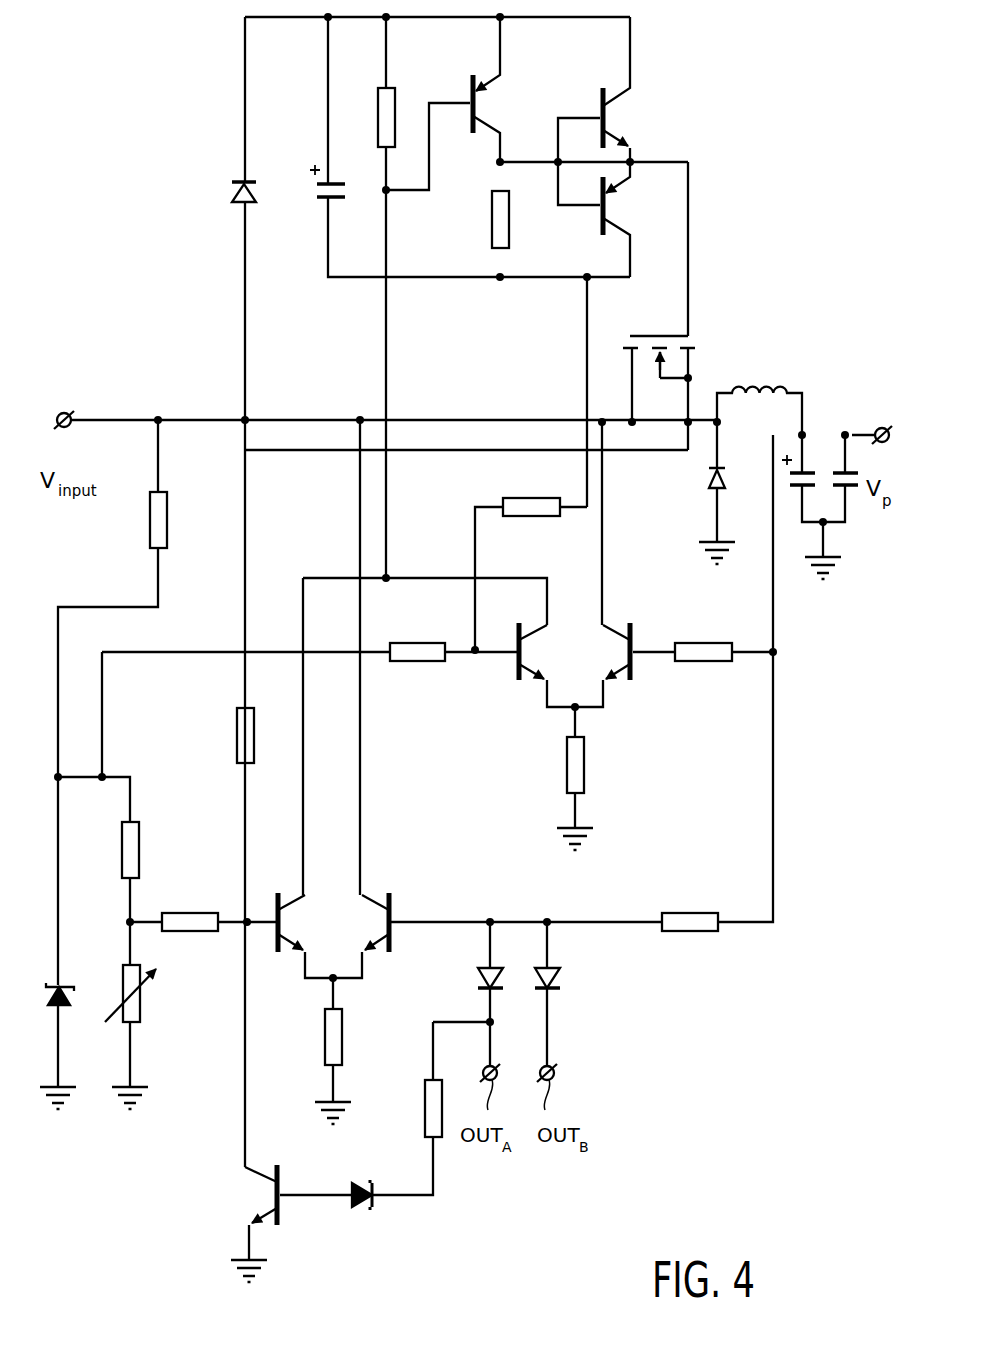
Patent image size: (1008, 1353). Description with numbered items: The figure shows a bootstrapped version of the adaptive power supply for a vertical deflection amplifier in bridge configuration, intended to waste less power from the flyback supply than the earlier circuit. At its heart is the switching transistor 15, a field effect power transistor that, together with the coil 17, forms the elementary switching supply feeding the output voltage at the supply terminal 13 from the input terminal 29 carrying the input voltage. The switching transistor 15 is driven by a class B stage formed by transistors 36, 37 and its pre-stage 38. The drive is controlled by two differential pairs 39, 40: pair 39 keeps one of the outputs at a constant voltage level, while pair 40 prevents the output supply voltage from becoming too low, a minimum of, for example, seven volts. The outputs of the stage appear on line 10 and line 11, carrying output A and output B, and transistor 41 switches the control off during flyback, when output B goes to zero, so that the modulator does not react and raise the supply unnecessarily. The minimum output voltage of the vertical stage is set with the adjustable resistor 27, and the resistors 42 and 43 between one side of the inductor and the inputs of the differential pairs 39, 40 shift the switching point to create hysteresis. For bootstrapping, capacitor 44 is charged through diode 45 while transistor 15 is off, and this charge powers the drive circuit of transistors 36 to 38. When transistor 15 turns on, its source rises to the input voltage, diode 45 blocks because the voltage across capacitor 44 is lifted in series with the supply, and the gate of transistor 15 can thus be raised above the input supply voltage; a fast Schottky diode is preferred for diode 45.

The line 10 is at (487, 1010).
The line 11 is at (562, 1022).
The output terminal Vp 13 is at (878, 470).
The switching transistor 15 is at (712, 336).
The coil 17 is at (768, 380).
The adjustable resistor 27 is at (145, 1012).
The input terminal Vinput 29 is at (70, 455).
The transistor 36 is at (620, 117).
The transistor 37 is at (597, 230).
The pre-stage 38 is at (490, 100).
The differential pair 39 is at (388, 868).
The differential pair 40 is at (624, 692).
The transistor 41 is at (258, 1203).
The resistor 42 is at (237, 741).
The resistor 43 is at (532, 497).
The capacitor 44 is at (315, 212).
The diode 45 is at (232, 193).